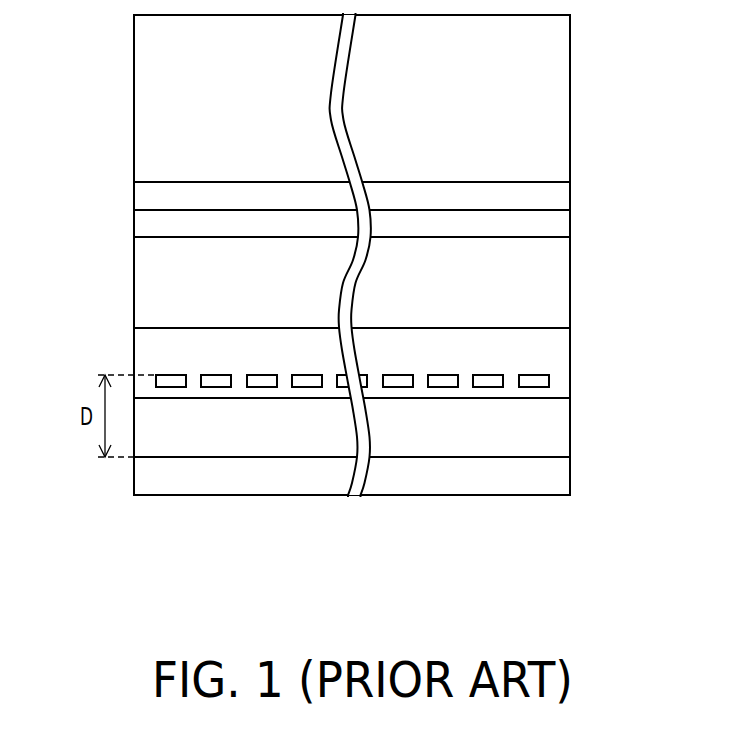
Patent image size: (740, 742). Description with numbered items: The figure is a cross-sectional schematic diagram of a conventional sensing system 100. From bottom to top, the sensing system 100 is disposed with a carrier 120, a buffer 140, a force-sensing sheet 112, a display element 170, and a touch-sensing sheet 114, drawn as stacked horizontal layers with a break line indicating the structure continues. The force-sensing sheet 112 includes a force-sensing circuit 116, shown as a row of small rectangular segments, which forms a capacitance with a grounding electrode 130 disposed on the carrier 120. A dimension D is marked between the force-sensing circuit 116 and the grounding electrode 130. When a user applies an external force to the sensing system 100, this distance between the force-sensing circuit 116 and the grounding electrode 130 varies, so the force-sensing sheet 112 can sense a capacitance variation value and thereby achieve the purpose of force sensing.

The sensing system 100 is at (642, 593).
The touch-sensing sheet 114 is at (548, 193).
The display element 170 is at (548, 283).
The force-sensing sheet 112 is at (548, 349).
The force-sensing circuit 116 is at (543, 380).
The buffer 140 is at (538, 427).
The carrier 120 is at (538, 475).
The grounding electrode 130 is at (173, 458).